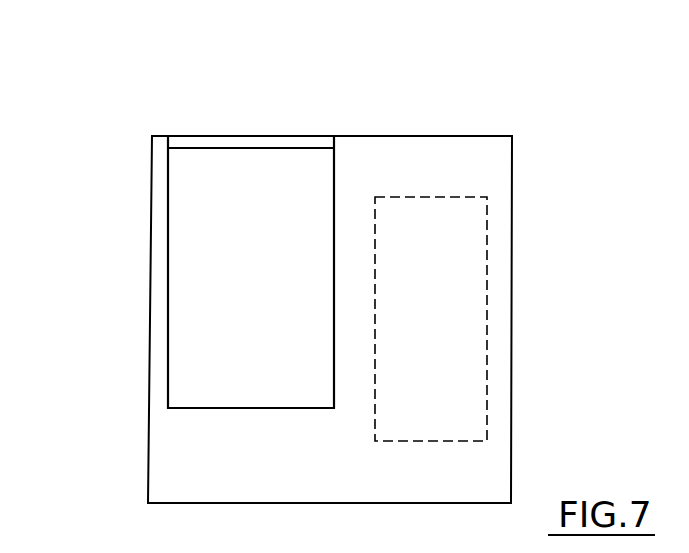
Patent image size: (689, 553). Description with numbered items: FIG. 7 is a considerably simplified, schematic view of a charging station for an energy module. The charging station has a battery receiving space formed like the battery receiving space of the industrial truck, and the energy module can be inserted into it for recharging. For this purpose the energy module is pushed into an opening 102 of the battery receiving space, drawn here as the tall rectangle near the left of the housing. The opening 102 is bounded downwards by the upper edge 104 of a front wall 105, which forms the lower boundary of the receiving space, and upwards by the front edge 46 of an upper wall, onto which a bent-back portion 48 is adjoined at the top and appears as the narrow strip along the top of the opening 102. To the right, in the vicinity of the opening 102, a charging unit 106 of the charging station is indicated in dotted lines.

The front edge 46 is at (285, 146).
The bent-back portion 48 is at (185, 138).
The opening 102 is at (223, 185).
The upper edge 104 is at (210, 407).
The front wall 105 is at (202, 438).
The charging unit 106 is at (397, 252).